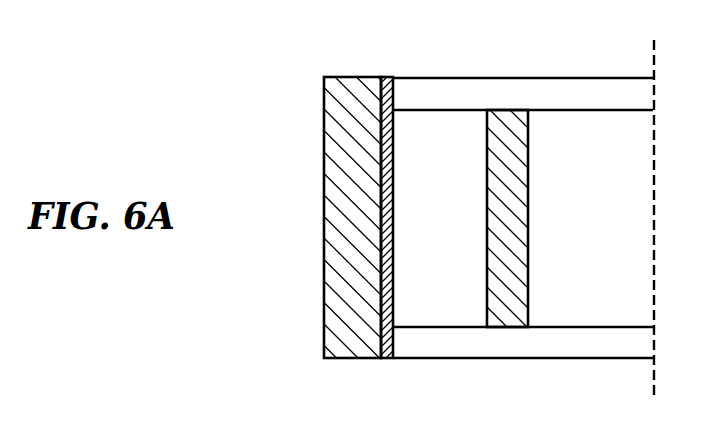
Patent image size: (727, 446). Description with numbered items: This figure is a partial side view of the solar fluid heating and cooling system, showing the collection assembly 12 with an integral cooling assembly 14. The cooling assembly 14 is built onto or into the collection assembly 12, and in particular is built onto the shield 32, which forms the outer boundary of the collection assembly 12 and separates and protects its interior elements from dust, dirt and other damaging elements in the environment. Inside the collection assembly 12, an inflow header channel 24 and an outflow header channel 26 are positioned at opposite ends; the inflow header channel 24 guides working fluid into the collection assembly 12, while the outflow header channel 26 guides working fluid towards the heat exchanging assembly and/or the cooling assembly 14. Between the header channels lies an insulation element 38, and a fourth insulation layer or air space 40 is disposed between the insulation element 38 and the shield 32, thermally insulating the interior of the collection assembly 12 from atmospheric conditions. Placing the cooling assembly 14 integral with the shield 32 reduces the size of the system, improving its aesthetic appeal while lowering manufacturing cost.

The collection assembly 12 is at (352, 47).
The cooling assembly 14 is at (340, 362).
The inflow header channel 24 is at (548, 350).
The outflow header channel 26 is at (563, 92).
The shield 32 is at (387, 283).
The insulation element 38 is at (490, 209).
The fourth insulation layer or air space 40 is at (454, 155).